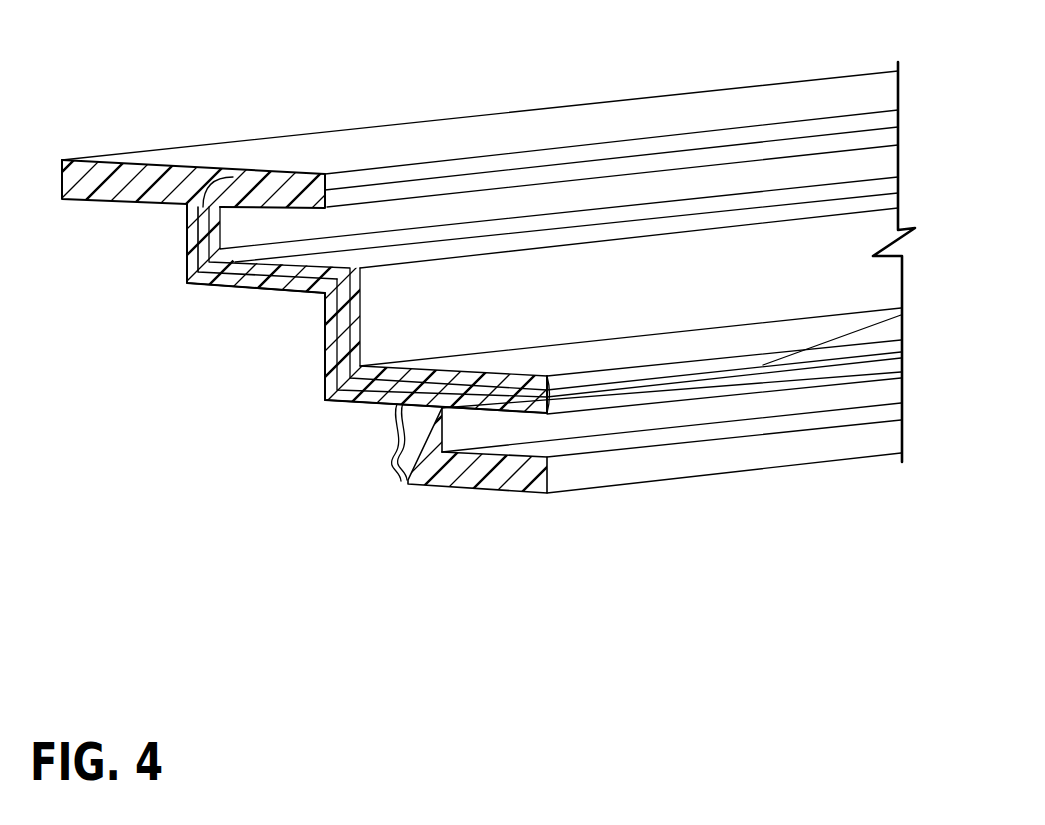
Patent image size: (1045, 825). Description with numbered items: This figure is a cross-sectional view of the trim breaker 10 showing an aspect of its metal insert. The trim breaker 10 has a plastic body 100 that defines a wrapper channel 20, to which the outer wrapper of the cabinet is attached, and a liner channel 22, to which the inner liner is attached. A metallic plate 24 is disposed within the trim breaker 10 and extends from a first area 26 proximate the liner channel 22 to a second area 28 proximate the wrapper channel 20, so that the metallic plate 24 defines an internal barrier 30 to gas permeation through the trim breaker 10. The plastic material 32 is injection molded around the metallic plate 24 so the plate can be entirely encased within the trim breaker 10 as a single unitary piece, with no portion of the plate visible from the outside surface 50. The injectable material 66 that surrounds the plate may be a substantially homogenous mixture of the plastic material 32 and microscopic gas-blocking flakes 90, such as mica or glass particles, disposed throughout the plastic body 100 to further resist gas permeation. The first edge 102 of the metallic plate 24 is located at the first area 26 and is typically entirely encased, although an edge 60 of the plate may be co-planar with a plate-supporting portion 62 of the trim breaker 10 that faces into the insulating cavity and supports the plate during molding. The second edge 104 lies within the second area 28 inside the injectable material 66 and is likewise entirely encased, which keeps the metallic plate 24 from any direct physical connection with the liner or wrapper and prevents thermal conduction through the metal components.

The trim breaker 10 is at (261, 84).
The wrapper channel 20 is at (272, 222).
The liner channel 22 is at (477, 430).
The metallic plate 24 is at (323, 342).
The first area 26 is at (517, 400).
The second area 28 is at (175, 198).
The internal barrier 30 is at (245, 272).
The plastic material 32 is at (360, 402).
The outside surface 50 is at (525, 128).
The edge 60 is at (763, 368).
The plate-supporting portion 62 is at (640, 393).
The injectable material 66 is at (687, 117).
The gas-blocking flakes 90 is at (118, 188).
The plastic body 100 is at (105, 142).
The first edge 102 is at (548, 395).
The second edge 104 is at (212, 176).